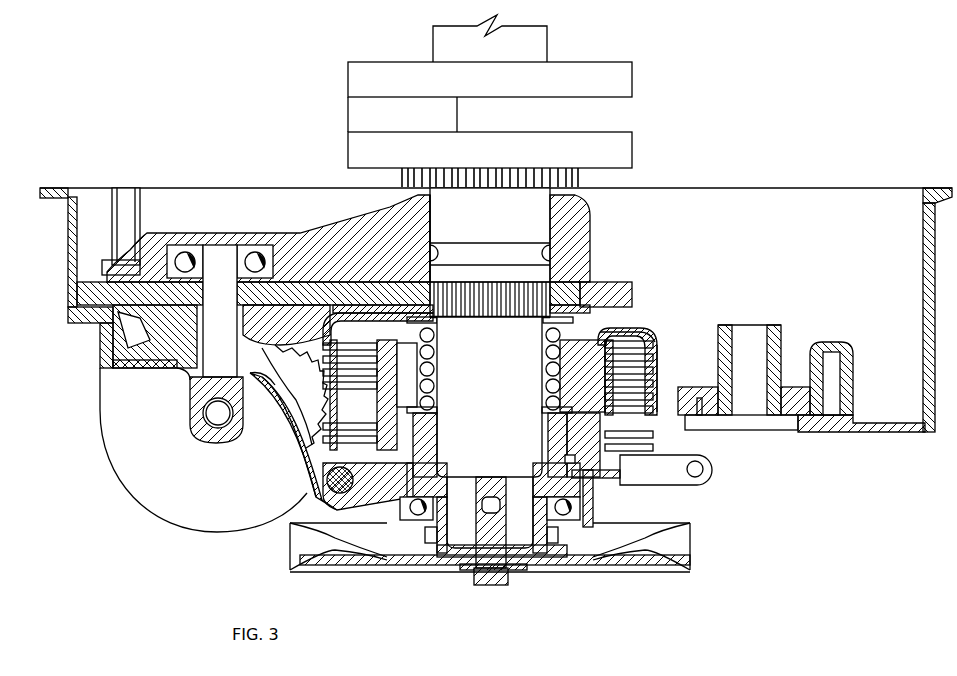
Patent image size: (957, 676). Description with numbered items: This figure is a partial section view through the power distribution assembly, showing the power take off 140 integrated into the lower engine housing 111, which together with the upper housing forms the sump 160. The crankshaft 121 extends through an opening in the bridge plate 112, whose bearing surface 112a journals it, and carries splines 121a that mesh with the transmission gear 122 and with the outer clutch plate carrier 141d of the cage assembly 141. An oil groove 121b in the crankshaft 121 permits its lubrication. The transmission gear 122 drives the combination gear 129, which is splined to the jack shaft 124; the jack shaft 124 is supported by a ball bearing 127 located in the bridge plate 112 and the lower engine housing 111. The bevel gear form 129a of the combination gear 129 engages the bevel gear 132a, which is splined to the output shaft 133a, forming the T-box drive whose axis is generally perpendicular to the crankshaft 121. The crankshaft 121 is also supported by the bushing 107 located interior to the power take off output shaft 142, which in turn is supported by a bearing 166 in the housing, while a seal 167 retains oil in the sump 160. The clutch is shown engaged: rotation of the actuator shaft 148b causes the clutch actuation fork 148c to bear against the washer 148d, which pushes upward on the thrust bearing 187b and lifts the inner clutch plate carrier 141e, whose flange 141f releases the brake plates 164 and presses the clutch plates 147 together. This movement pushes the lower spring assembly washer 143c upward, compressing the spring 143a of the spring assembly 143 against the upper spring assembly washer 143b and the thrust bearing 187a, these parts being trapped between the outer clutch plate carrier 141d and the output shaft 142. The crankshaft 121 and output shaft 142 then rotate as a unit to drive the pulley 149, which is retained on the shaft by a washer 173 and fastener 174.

The bushing 107 is at (548, 427).
The lower engine housing 111 is at (207, 493).
The bridge plate 112 is at (307, 233).
The bearing surface 112a is at (432, 205).
The crankshaft 121 is at (536, 212).
The splines 121a is at (507, 300).
The oil groove 121b is at (453, 253).
The transmission gear 122 is at (600, 292).
The jack shaft 124 is at (232, 317).
The ball bearing 127 is at (188, 260).
The combination gear 129 is at (86, 292).
The bevel gear form 129a is at (150, 333).
The bevel gear 132a is at (302, 390).
The output shaft 133a is at (218, 415).
The power take off 140 is at (318, 458).
The cage assembly 141 is at (718, 348).
The outer clutch plate carrier 141d is at (635, 322).
The inner clutch plate carrier 141e is at (670, 341).
The flange 141f is at (310, 438).
The power take off output shaft 142 is at (593, 491).
The spring assembly 143 is at (452, 364).
The spring 143a is at (433, 384).
The upper spring assembly washer 143b is at (436, 326).
The lower spring assembly washer 143c is at (438, 408).
The clutch plates 147 is at (633, 365).
The actuator shaft 148b is at (325, 484).
The clutch actuation fork 148c is at (466, 510).
The washer 148d is at (572, 459).
The pulley 149 is at (670, 568).
The sump 160 is at (882, 410).
The brake plates 164 is at (660, 437).
The bearing 166 is at (418, 514).
The seal 167 is at (562, 541).
The washer 173 is at (513, 570).
The fastener 174 is at (487, 587).
The thrust bearing 187a is at (407, 322).
The thrust bearing 187b is at (622, 463).